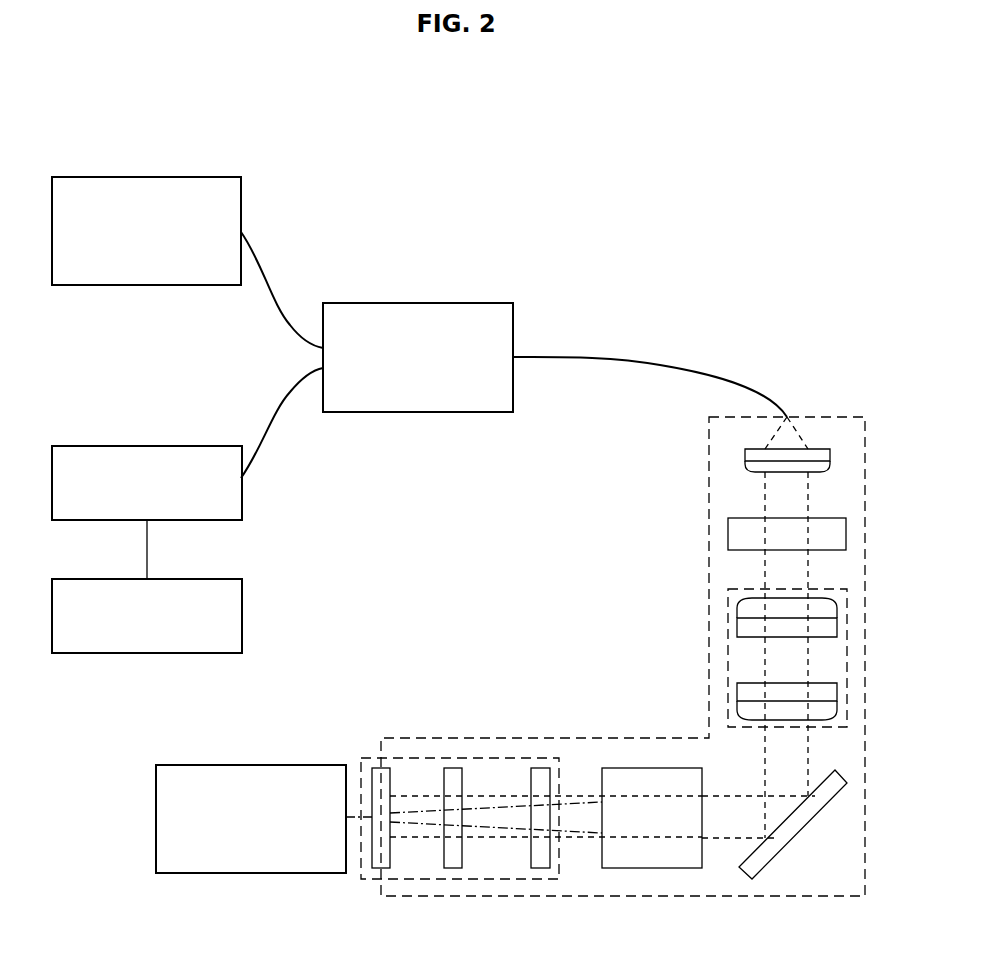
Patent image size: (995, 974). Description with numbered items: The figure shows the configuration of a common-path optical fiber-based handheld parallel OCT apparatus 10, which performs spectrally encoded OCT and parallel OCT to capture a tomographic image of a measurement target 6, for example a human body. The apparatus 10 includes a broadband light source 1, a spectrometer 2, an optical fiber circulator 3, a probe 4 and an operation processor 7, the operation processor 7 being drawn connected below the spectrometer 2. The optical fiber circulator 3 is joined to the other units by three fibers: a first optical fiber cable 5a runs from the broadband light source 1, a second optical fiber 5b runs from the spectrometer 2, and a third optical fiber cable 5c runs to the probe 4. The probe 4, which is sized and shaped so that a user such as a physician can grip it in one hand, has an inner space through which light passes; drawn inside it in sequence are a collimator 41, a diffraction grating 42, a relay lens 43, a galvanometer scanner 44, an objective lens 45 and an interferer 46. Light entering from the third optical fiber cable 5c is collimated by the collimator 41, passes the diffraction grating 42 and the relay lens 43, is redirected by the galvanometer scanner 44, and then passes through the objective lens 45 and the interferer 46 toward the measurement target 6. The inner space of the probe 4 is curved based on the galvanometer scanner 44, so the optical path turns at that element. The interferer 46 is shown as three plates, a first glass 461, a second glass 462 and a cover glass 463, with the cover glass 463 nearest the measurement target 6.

The common-path optical fiber-based handheld parallel OCT apparatus 10 is at (476, 100).
The broadband light source 1 is at (180, 177).
The spectrometer 2 is at (180, 446).
The optical fiber circulator 3 is at (452, 303).
The probe 4 is at (820, 417).
The first optical fiber cable 5a is at (265, 280).
The second optical fiber 5b is at (267, 433).
The third optical fiber cable 5c is at (622, 357).
The measurement target 6 is at (252, 765).
The operation processor 7 is at (180, 579).
The collimator 41 is at (745, 452).
The diffraction grating 42 is at (728, 533).
The relay lens 43 is at (728, 589).
The galvanometer scanner 44 is at (778, 852).
The objective lens 45 is at (648, 868).
The interferer 46 is at (433, 755).
The first glass 461 is at (550, 868).
The second glass 462 is at (462, 868).
The cover glass 463 is at (390, 868).